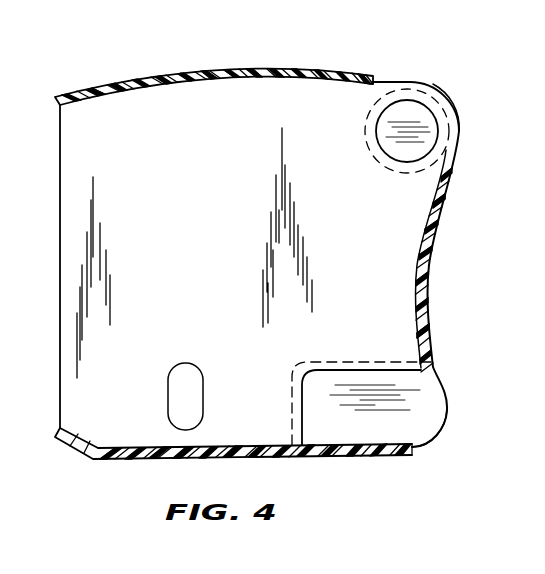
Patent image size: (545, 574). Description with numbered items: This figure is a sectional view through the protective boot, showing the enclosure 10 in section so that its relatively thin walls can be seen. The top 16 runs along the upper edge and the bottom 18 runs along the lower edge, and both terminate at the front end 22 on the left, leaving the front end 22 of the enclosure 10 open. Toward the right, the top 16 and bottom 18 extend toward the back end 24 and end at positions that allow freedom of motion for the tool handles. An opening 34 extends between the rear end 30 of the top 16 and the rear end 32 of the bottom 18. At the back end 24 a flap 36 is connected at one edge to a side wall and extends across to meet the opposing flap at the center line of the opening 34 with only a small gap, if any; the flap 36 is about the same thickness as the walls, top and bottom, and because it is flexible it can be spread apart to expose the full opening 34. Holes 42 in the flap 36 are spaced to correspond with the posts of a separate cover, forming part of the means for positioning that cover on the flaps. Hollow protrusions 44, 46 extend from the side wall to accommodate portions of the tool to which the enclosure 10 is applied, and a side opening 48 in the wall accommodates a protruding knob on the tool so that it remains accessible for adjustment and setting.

The enclosure 10 is at (58, 80).
The top 16 is at (232, 72).
The rear end of the top 30 is at (373, 78).
The front end 22 is at (58, 166).
The hollow protrusion 44 is at (430, 126).
The back end 24 is at (459, 152).
The holes 42 is at (443, 200).
The flap 36 is at (429, 267).
The opening 34 is at (410, 396).
The hollow protrusion 46 is at (404, 428).
The bottom 18 is at (333, 458).
The rear end of the bottom 32 is at (412, 458).
The side opening 48 is at (178, 416).